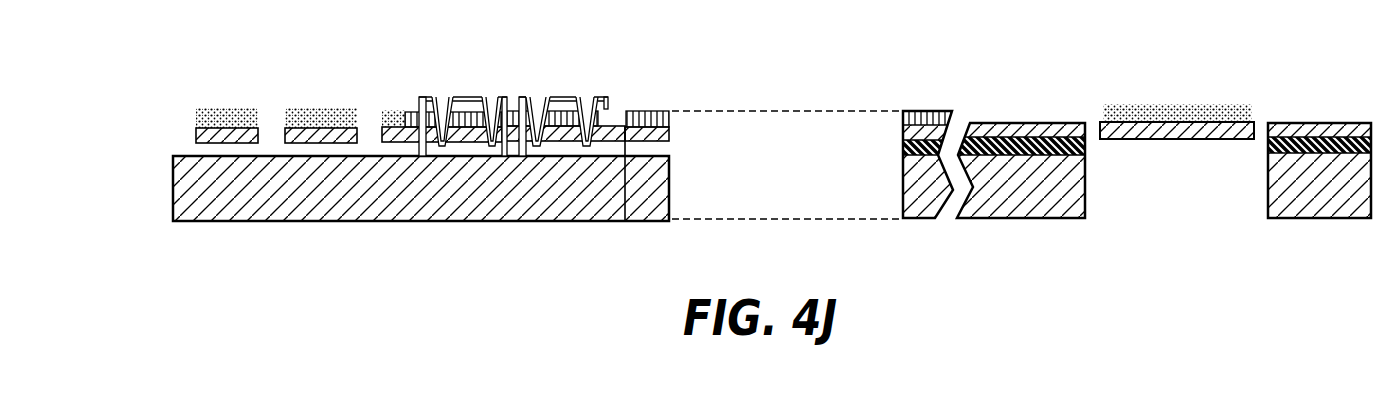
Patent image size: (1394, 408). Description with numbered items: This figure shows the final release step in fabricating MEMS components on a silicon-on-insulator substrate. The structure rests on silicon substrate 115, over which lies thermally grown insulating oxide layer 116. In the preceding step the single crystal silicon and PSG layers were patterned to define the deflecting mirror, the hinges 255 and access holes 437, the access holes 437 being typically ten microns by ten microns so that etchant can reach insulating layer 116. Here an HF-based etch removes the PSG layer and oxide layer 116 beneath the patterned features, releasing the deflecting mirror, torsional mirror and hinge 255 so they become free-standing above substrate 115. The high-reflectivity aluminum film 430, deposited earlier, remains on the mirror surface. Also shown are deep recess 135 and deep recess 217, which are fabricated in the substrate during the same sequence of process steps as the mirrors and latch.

The silicon substrate 115 is at (398, 221).
The insulating oxide layer 116 is at (902, 143).
The deep recess 135 is at (783, 100).
The deep recess 217 is at (1182, 168).
The hinge 255 is at (465, 96).
The aluminum film 430 is at (1162, 105).
The access holes 437 is at (267, 117).